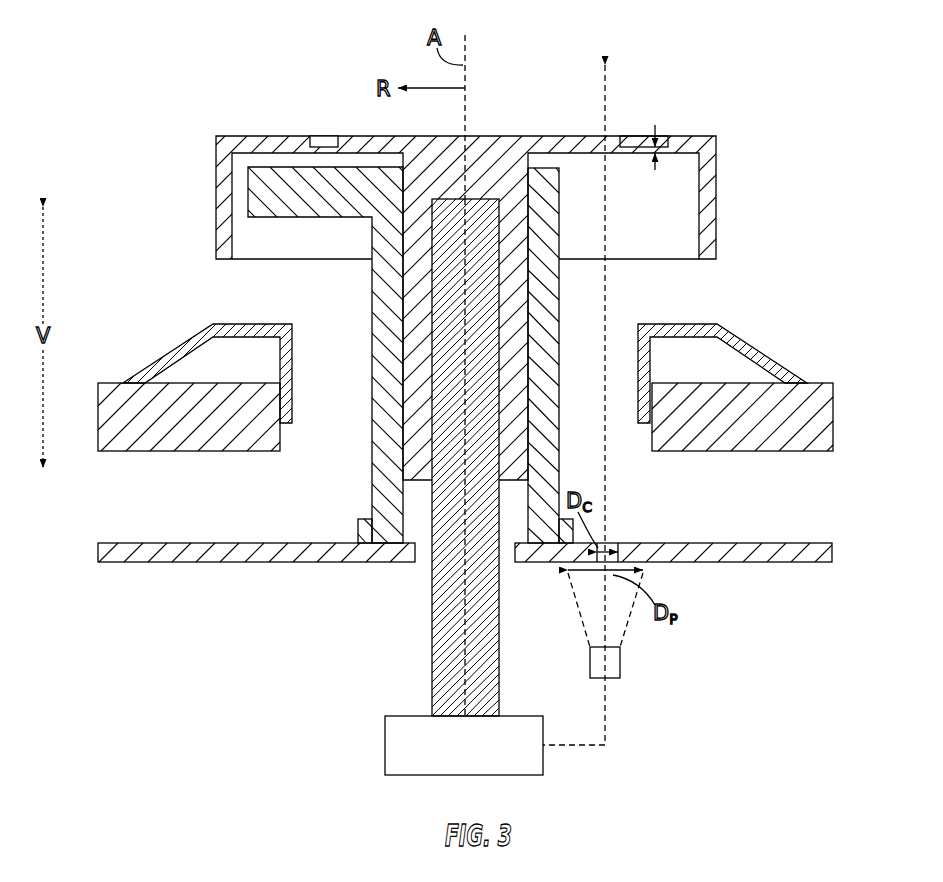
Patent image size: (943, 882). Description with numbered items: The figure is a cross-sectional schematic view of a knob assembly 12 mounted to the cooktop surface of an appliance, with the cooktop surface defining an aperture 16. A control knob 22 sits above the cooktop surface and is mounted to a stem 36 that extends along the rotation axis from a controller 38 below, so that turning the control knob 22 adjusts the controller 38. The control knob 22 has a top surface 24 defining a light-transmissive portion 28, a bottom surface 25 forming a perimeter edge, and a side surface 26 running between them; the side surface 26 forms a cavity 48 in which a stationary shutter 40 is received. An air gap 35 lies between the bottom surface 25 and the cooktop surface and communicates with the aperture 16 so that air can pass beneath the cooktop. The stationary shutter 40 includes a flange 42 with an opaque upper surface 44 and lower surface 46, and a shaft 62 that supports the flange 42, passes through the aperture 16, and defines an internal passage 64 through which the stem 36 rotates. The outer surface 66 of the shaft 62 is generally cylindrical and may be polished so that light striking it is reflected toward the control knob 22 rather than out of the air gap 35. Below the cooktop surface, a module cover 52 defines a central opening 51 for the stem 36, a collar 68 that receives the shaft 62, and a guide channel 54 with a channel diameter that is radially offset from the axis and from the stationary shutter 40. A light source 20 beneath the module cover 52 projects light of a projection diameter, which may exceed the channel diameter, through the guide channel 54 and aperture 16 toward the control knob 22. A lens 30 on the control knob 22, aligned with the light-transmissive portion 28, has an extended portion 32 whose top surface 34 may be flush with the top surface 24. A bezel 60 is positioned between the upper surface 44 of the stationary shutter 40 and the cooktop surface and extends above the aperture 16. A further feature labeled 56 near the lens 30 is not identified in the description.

The knob assembly 12 is at (105, 385).
The aperture 16 is at (323, 433).
The light source 20 is at (620, 668).
The control knob 22 is at (716, 165).
The top surface 24 is at (527, 133).
The bottom surface 25 is at (219, 264).
The side surface 26 is at (717, 227).
The light-transmissive portion 28 is at (581, 147).
The lens 30 is at (323, 147).
The extended portion 32 is at (659, 160).
The top surface of extended portion 34 is at (588, 134).
The air gap 35 is at (724, 307).
The stem 36 is at (431, 630).
The controller 38 is at (385, 752).
The stationary shutter 40 is at (558, 292).
The flange 42 is at (262, 193).
The upper surface 44 is at (272, 163).
The lower surface 46 is at (298, 229).
The cavity 48 is at (672, 260).
The central opening 51 is at (419, 563).
The module cover 52 is at (780, 543).
The guide channel 54 is at (623, 552).
The recess edge 56 is at (344, 138).
The bezel 60 is at (180, 350).
The shaft 62 is at (383, 332).
The internal passage 64 is at (516, 498).
The outer surface 66 is at (371, 385).
The collar 68 is at (358, 530).